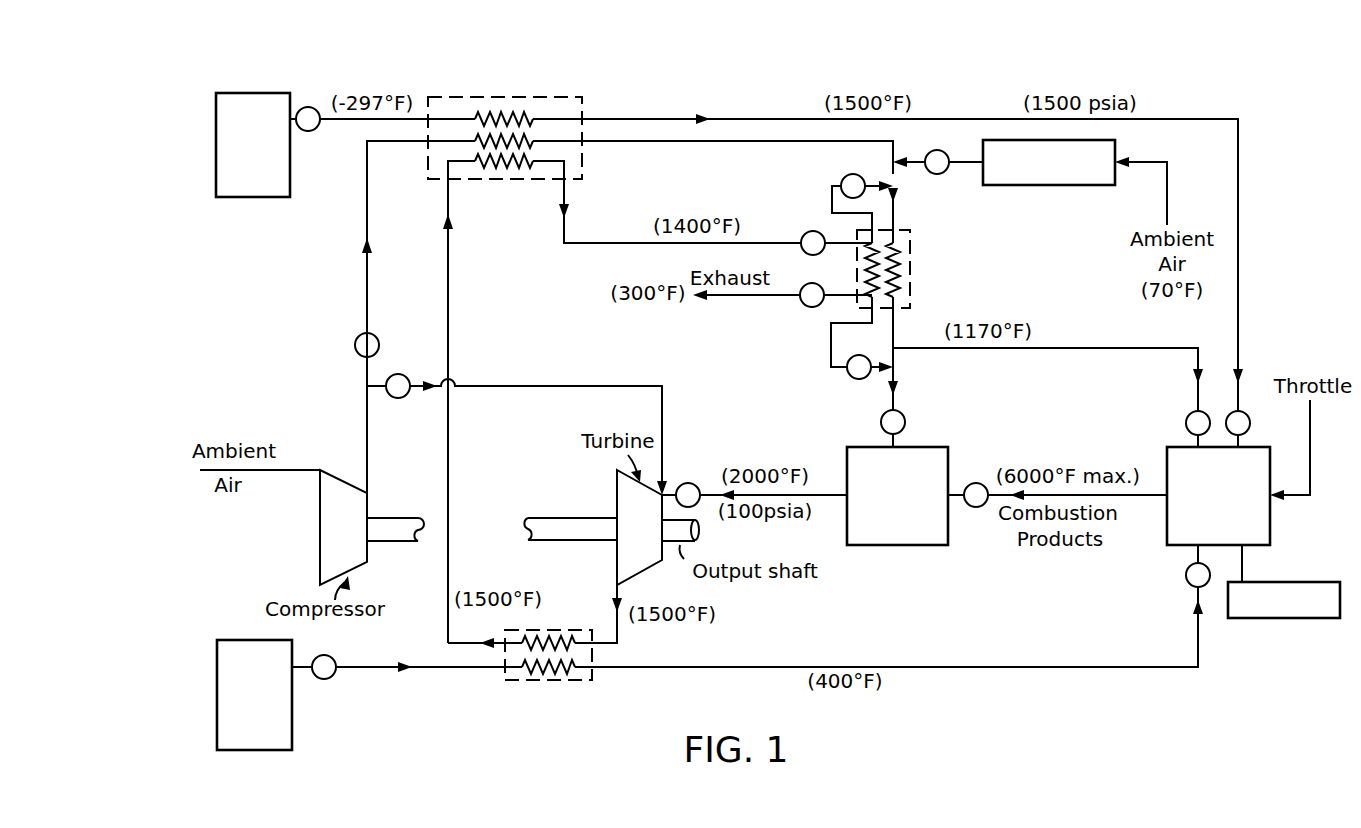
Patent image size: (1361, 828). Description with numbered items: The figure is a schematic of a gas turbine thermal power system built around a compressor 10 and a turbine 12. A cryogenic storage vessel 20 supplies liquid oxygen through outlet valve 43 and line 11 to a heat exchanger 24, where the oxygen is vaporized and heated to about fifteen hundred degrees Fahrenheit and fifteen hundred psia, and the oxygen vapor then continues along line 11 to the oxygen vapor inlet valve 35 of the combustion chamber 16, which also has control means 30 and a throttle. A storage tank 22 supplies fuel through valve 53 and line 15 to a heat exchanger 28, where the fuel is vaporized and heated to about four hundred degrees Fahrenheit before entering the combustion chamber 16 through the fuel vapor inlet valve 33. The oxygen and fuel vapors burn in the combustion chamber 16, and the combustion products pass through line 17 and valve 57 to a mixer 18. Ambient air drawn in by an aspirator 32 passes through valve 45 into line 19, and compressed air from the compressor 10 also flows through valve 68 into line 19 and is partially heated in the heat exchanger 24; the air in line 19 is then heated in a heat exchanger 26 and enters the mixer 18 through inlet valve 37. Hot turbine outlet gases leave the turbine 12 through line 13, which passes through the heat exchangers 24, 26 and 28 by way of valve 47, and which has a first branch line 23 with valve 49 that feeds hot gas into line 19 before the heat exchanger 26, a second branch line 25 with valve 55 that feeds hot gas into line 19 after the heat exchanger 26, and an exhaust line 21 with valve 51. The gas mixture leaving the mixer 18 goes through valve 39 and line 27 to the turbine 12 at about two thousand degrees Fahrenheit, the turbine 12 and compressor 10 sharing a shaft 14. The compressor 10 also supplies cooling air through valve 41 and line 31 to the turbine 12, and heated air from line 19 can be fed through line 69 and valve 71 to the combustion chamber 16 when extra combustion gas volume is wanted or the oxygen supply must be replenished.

The compressor 10 is at (320, 554).
The line 11 is at (668, 118).
The turbine 12 is at (617, 573).
The line 13 is at (449, 291).
The shaft 14 is at (408, 518).
The line 15 is at (372, 669).
The combustion chamber 16 is at (1270, 521).
The line 17 is at (957, 483).
The mixer 18 is at (900, 547).
The line 19 is at (365, 290).
The cryogenic storage vessel 20 is at (258, 198).
The exhaust line 21 is at (724, 297).
The storage tank 22 is at (215, 646).
The first branch line 23 is at (830, 182).
The heat exchanger 24 is at (537, 190).
The second branch line 25 is at (830, 370).
The heat exchanger 26 is at (920, 270).
The line 27 is at (829, 493).
The heat exchanger 28 is at (546, 683).
The control means 30 is at (1276, 620).
The line 31 is at (490, 396).
The aspirator 32 is at (1055, 186).
The fuel vapor inlet valve 33 is at (1186, 581).
The oxygen vapor inlet valve 35 is at (1250, 423).
The inlet valve 37 is at (904, 414).
The valve 39 is at (689, 482).
The valve 41 is at (401, 398).
The outlet valve 43 is at (313, 131).
The valve 45 is at (933, 175).
The valve 47 is at (804, 231).
The valve 49 is at (846, 174).
The valve 51 is at (804, 306).
The valve 53 is at (326, 680).
The valve 55 is at (858, 380).
The valve 57 is at (978, 507).
The air line valve 68 is at (354, 345).
The line 69 is at (1088, 347).
The valve 71 is at (1186, 423).